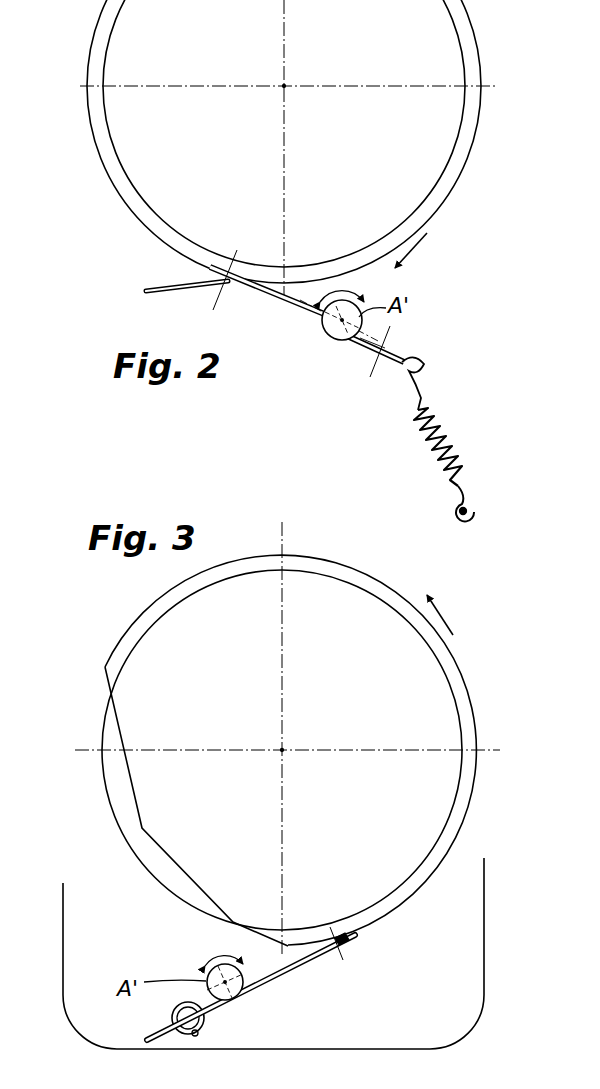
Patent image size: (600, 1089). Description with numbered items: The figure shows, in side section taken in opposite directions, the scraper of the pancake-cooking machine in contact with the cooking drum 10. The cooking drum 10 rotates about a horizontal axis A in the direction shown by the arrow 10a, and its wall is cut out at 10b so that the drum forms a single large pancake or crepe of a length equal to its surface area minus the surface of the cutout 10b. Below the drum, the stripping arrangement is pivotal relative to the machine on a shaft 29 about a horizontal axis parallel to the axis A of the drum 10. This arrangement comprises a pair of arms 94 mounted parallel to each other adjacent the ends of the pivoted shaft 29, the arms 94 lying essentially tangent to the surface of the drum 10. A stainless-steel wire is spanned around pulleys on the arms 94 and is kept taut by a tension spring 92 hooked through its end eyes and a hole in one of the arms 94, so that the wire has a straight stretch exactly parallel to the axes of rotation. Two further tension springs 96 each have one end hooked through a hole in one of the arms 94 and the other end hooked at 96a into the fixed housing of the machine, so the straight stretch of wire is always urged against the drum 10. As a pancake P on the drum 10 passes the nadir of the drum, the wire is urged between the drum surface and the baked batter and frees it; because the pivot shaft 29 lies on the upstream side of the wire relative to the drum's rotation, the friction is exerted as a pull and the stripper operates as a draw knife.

In FIG. 2, the cooking drum 10 is at (434, 172).
In FIG. 3, the cooking drum 10 is at (453, 726).
In FIG. 2, the arrow 10a is at (420, 247).
In FIG. 3, the arrow 10a is at (443, 617).
In FIG. 3, the cutout 10b is at (104, 790).
In FIG. 2, the shaft 29 is at (340, 342).
In FIG. 3, the shaft 29 is at (205, 976).
In FIG. 3, the tension spring 92 is at (205, 1027).
In FIG. 2, the arms 94 is at (263, 305).
In FIG. 3, the arms 94 is at (286, 975).
In FIG. 2, the tension springs 96 is at (448, 452).
In FIG. 2, the hook point on fixed housing 96a is at (470, 514).
In FIG. 2, the horizontal axis A is at (281, 83).
In FIG. 3, the horizontal axis A is at (279, 747).
In FIG. 2, the pancake P is at (150, 285).